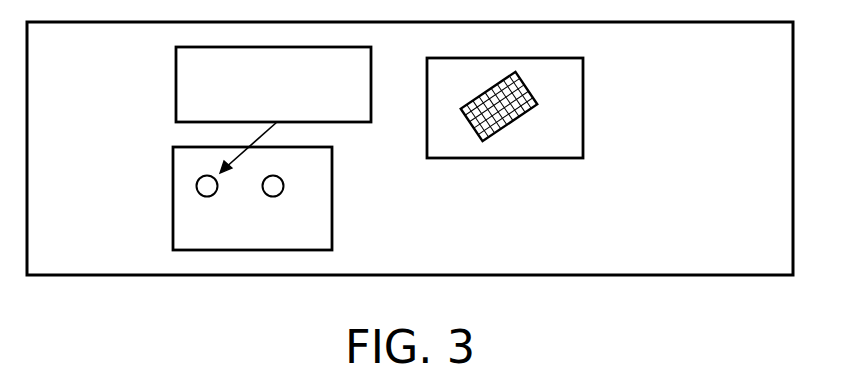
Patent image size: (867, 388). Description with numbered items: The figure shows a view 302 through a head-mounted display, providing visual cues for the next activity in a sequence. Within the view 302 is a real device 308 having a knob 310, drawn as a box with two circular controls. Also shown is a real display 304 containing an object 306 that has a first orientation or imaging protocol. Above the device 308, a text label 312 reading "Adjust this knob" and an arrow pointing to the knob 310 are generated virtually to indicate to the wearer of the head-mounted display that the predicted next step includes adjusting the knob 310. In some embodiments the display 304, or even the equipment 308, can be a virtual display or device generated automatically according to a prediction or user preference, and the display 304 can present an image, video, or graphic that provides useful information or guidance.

The view 302 is at (88, 59).
The display 304 is at (577, 151).
The object 306 is at (498, 134).
The device 308 is at (272, 239).
The knob 310 is at (196, 182).
The text label 312 is at (293, 112).